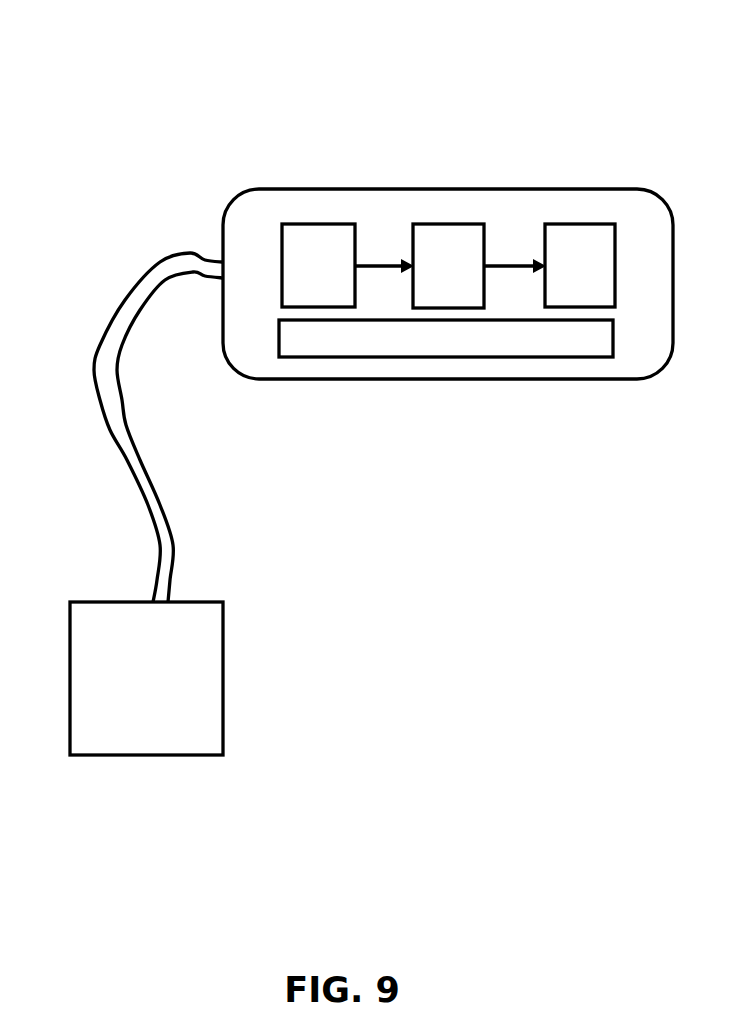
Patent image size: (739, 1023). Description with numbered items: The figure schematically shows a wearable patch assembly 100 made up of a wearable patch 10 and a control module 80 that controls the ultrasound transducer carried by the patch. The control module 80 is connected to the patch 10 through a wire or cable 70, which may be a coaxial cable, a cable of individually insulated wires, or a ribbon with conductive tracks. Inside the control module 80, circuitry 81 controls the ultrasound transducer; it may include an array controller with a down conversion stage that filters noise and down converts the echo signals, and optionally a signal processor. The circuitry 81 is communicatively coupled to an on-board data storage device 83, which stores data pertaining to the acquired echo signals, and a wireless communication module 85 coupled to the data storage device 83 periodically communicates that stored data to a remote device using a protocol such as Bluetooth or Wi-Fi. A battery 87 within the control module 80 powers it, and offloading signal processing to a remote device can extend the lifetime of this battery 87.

The wearable patch 10 is at (210, 685).
The wire or cable 70 is at (140, 475).
The control module 80 is at (453, 379).
The circuitry 81 is at (312, 240).
The data storage device 83 is at (455, 240).
The wireless communication module 85 is at (578, 240).
The battery 87 is at (582, 350).
The wearable patch assembly 100 is at (368, 890).